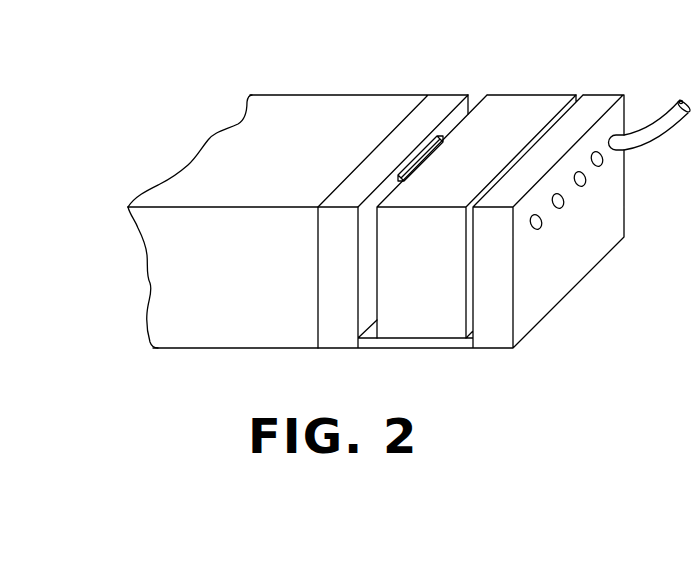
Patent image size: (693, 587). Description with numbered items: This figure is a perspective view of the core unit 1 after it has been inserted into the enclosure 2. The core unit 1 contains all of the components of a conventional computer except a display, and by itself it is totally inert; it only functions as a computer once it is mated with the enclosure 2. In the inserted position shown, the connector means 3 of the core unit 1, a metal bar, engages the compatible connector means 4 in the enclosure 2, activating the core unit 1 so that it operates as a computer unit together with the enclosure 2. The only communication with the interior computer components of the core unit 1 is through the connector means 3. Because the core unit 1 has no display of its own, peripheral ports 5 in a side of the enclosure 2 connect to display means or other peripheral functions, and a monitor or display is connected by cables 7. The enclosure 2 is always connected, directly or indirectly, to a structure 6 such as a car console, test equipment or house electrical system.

The core unit 1 is at (527, 100).
The enclosure 2 is at (330, 263).
The connector means 3 is at (437, 152).
The connector means 4 is at (413, 153).
The peripheral ports 5 is at (541, 226).
The structure 6 is at (331, 103).
The cables 7 is at (651, 121).